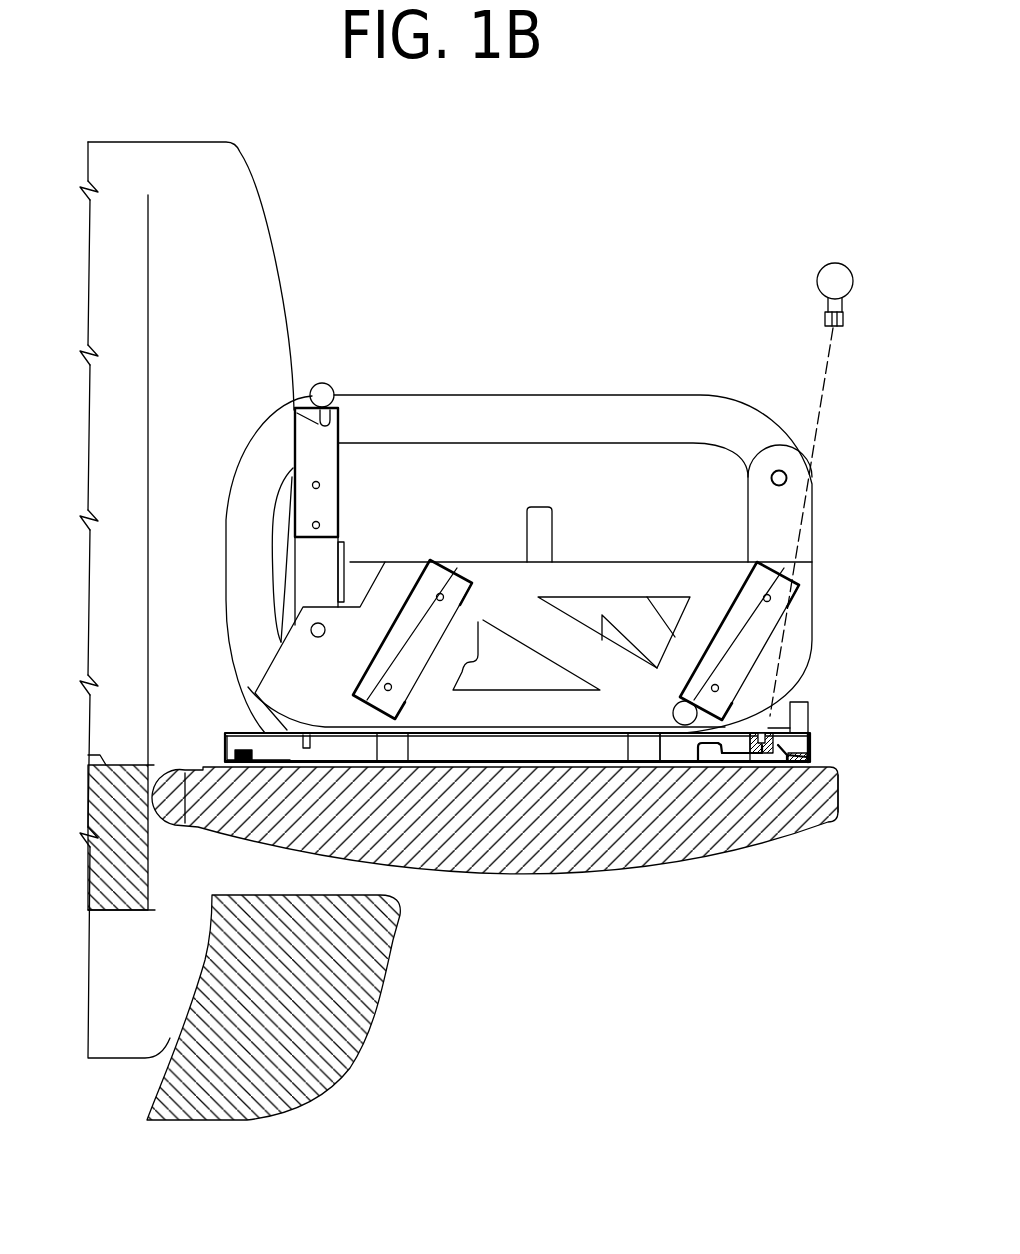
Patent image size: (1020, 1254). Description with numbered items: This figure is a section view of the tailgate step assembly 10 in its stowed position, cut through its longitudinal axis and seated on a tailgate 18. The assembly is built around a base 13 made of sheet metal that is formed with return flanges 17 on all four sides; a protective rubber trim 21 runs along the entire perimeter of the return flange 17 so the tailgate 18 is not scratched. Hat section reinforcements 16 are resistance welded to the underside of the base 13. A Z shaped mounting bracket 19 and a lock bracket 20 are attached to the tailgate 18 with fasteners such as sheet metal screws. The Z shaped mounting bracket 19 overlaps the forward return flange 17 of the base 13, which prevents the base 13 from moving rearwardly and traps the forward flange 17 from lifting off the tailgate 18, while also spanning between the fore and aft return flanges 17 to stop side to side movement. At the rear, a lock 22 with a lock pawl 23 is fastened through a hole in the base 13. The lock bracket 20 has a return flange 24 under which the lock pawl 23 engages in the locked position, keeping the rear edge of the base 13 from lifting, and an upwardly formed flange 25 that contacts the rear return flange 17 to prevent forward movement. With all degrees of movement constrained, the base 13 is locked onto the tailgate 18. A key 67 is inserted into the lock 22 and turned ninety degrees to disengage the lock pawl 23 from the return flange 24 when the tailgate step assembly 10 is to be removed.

The tailgate step assembly 10 is at (485, 380).
The base 13 is at (810, 748).
The hat section reinforcements 16 is at (408, 744).
The return flange 17 is at (168, 815).
The tailgate 18 is at (818, 768).
The Z shaped mounting bracket 19 is at (248, 687).
The lock bracket 20 is at (750, 750).
The protective rubber trim 21 is at (229, 735).
The lock 22 is at (768, 728).
The lock pawl 23 is at (713, 740).
The return flange 24 is at (697, 740).
The upwardly formed flange 25 is at (783, 760).
The key 67 is at (830, 277).